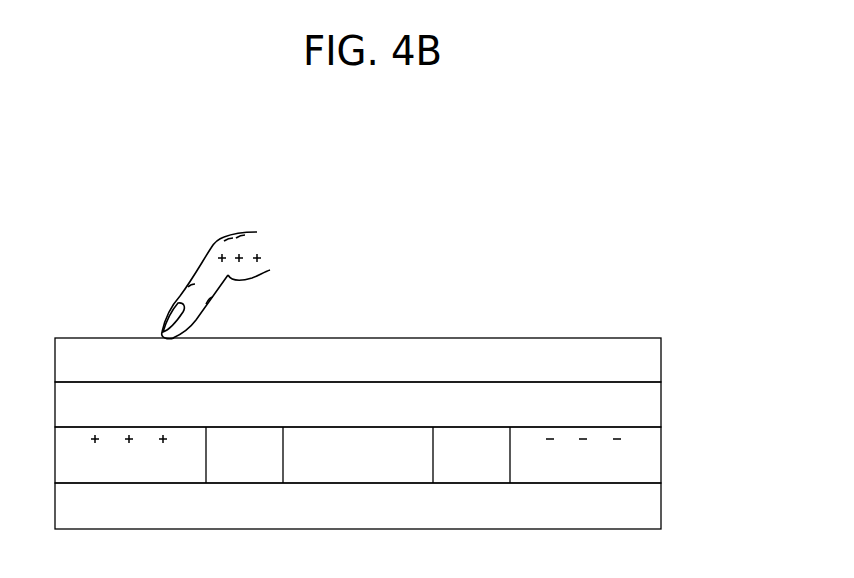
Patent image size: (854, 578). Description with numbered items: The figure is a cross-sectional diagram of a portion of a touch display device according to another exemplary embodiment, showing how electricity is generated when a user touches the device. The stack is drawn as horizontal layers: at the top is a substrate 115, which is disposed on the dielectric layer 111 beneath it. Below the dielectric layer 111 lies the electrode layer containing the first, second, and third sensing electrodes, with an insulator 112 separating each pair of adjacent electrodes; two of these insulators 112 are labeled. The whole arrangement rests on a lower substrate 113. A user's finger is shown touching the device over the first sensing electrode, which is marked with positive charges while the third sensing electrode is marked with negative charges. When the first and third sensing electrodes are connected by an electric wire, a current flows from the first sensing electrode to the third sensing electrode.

The substrate 115 is at (650, 362).
The dielectric layer 111 is at (650, 405).
The insulator 112 is at (248, 448).
The substrate 113 is at (650, 510).